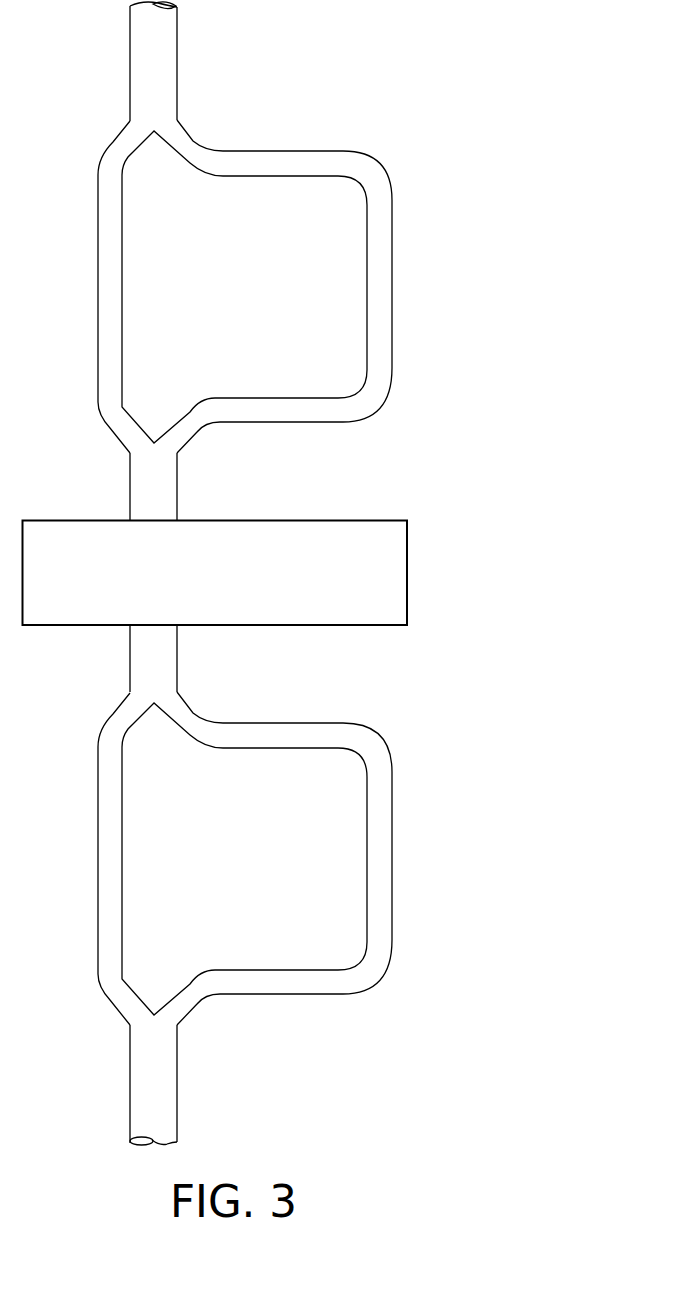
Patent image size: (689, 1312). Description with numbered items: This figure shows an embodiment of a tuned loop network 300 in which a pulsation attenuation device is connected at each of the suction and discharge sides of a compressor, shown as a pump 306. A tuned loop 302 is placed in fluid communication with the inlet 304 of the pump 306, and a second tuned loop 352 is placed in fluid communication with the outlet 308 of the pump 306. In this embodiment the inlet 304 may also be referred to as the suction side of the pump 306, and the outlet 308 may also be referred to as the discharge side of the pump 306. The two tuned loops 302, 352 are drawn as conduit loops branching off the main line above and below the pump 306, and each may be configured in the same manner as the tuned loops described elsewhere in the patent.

The tuned loop network 300 is at (548, 100).
The tuned loop 302 is at (99, 278).
The inlet 304 is at (167, 521).
The pump 306 is at (233, 586).
The outlet 308 is at (167, 625).
The second tuned loop 352 is at (99, 857).